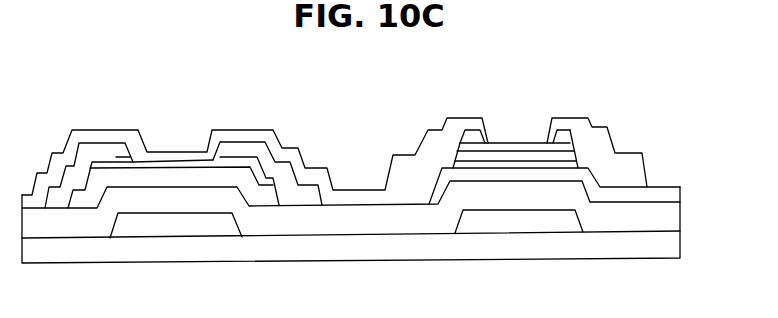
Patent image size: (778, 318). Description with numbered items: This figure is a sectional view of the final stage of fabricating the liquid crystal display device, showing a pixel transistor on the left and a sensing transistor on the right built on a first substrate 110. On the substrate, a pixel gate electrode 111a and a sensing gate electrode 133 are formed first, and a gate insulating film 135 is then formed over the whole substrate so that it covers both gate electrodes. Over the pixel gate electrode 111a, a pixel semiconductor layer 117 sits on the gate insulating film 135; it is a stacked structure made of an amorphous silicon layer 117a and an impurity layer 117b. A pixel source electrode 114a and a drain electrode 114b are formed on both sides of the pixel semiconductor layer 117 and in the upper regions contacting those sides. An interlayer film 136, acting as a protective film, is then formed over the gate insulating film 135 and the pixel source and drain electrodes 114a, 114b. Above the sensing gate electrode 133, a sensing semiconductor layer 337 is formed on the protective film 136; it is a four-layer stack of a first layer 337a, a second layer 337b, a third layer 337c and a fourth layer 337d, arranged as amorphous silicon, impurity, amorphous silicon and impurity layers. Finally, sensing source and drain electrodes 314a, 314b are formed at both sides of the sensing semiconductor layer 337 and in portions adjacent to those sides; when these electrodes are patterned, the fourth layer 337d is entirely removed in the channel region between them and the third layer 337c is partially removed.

The first substrate 110 is at (683, 243).
The pixel gate electrode 111a is at (170, 228).
The pixel source electrode 114a is at (95, 155).
The drain electrode 114b is at (242, 157).
The pixel semiconductor layer 117 is at (205, 96).
The amorphous silicon layer 117a is at (153, 168).
The impurity layer 117b is at (117, 160).
The sensing gate electrode 133 is at (519, 229).
The gate insulating film 135 is at (683, 213).
The interlayer film 136 is at (683, 191).
The sensing source electrode 314a is at (463, 118).
The sensing drain electrode 314b is at (555, 118).
The sensing semiconductor layer 337 is at (655, 82).
The first layer 337a is at (578, 167).
The second layer 337b is at (576, 156).
The third layer 337c is at (574, 146).
The fourth layer 337d is at (478, 132).